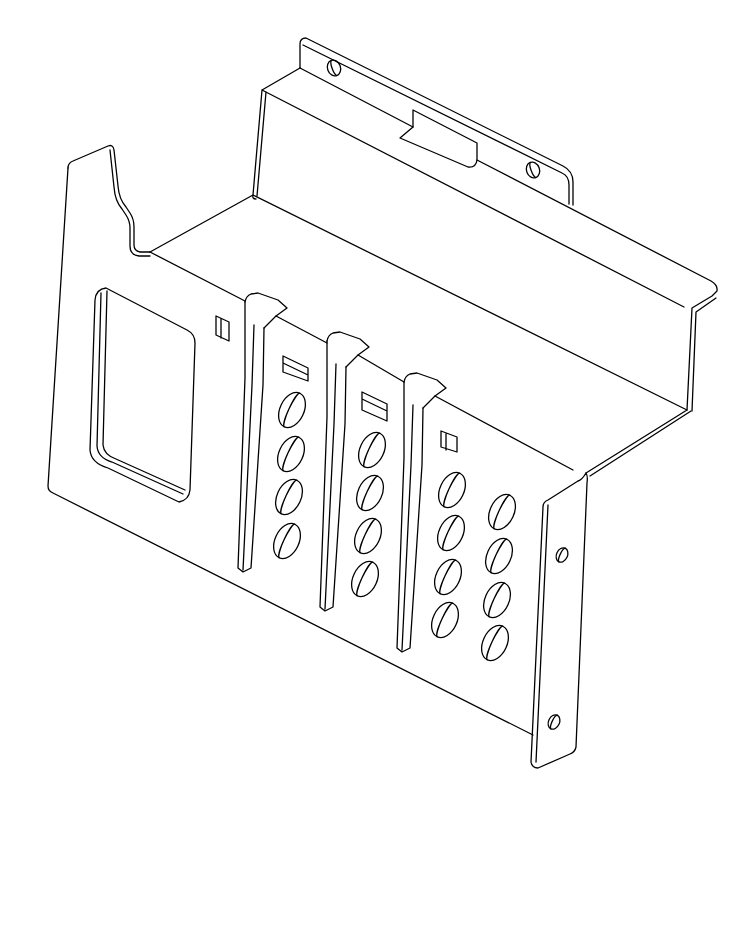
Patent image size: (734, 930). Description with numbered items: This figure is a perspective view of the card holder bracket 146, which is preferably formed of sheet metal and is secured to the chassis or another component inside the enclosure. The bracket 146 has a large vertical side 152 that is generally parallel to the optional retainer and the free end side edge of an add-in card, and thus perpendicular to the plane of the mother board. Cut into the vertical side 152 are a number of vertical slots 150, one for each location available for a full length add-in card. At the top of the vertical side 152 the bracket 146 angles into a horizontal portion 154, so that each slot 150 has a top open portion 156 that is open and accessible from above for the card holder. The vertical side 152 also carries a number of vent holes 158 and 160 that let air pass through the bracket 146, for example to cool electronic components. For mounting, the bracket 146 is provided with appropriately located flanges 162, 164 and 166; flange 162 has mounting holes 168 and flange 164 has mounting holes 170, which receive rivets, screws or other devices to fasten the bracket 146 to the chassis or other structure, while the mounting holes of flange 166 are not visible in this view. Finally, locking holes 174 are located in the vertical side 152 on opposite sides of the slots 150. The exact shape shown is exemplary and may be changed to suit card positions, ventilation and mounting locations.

The bracket 146 is at (632, 115).
The vertical slots 150 is at (410, 633).
The vertical side 152 is at (210, 535).
The horizontal portion 154 is at (253, 253).
The top open portion 156 is at (430, 382).
The vent holes 158 is at (288, 538).
The vent hole 160 is at (140, 441).
The flange 162 is at (425, 105).
The flange 164 is at (567, 740).
The flange 166 is at (100, 168).
The mounting holes 168 is at (528, 172).
The mounting holes 170 is at (555, 719).
The locking holes 174 is at (292, 363).